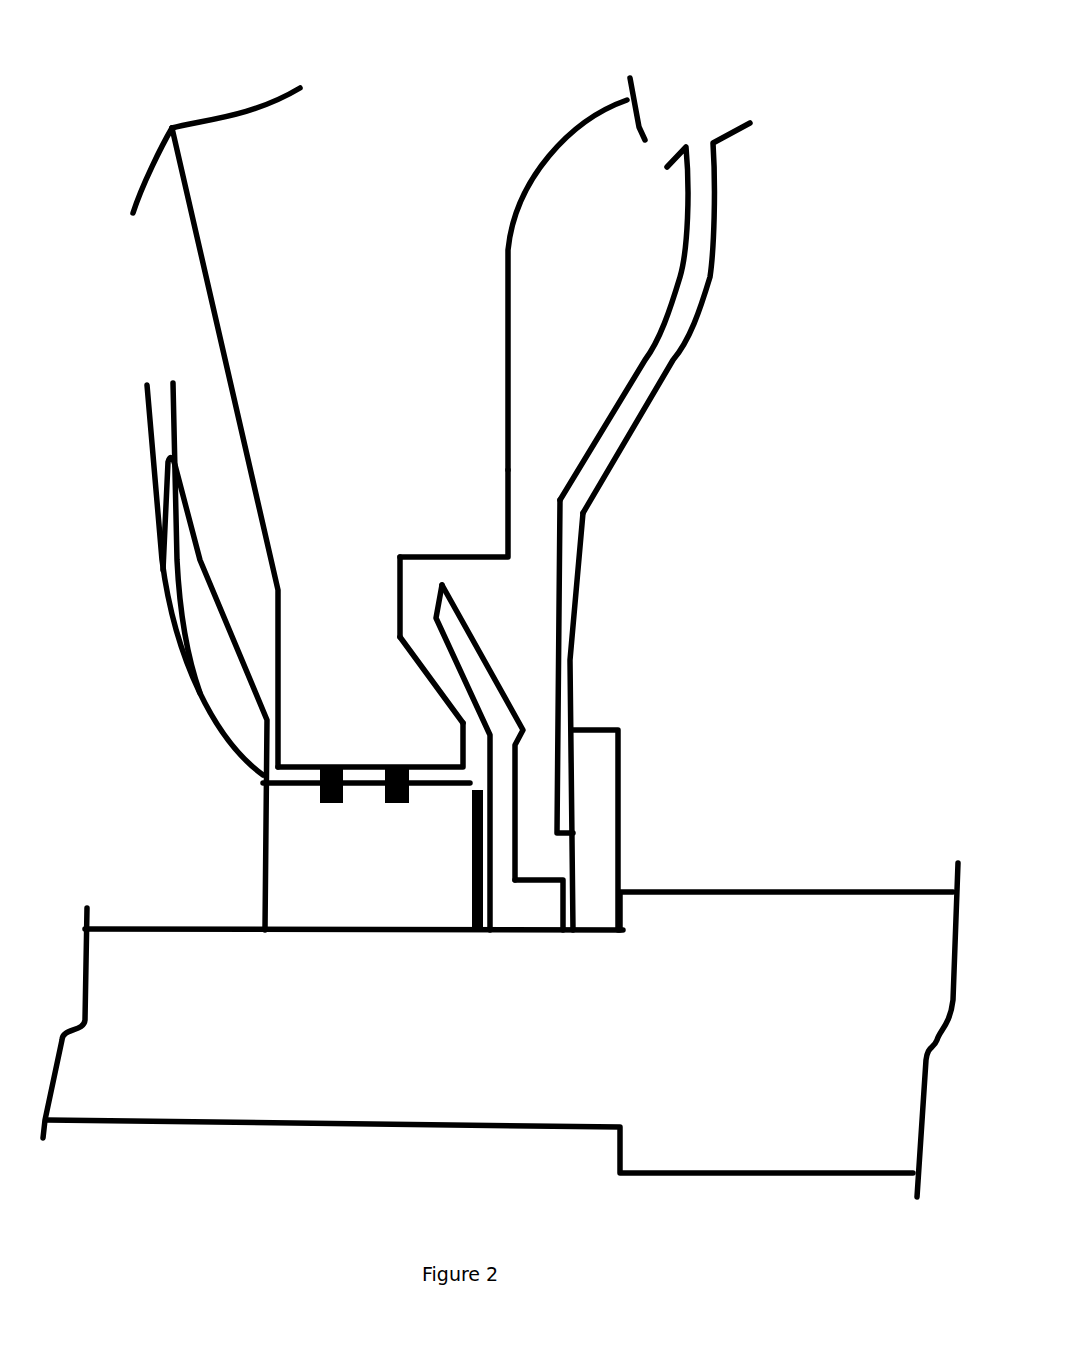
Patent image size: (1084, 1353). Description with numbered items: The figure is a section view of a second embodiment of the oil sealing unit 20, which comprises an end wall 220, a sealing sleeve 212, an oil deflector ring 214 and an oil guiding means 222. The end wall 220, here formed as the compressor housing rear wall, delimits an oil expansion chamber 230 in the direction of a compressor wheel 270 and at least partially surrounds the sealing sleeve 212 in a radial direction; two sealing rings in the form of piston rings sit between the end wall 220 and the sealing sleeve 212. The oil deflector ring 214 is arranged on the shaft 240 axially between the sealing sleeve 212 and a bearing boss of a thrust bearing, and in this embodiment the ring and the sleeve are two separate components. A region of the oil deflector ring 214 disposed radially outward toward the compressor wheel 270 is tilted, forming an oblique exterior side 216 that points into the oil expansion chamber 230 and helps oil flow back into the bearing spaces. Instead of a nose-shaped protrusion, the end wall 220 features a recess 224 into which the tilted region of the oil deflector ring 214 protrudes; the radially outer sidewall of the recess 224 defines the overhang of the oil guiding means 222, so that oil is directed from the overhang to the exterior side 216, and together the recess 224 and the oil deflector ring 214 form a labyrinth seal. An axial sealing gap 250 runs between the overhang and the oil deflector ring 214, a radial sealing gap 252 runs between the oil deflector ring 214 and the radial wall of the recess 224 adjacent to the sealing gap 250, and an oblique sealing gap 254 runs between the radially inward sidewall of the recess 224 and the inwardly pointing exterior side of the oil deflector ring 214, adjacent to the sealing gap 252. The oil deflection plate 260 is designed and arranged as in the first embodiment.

The oil sealing unit 20 is at (391, 36).
The end wall 220 is at (254, 427).
The oil expansion chamber 230 is at (576, 274).
The oil deflection plate 260 is at (685, 305).
The oil guiding means 222 is at (477, 542).
The recess 224 is at (477, 595).
The exterior side 216 is at (497, 690).
The sealing gap 250 is at (440, 573).
The sealing gap 252 is at (413, 613).
The sealing gap 254 is at (440, 662).
The compressor wheel 270 is at (181, 656).
The sealing sleeve 212 is at (362, 902).
The oil deflector ring 214 is at (522, 905).
The shaft 240 is at (500, 1030).